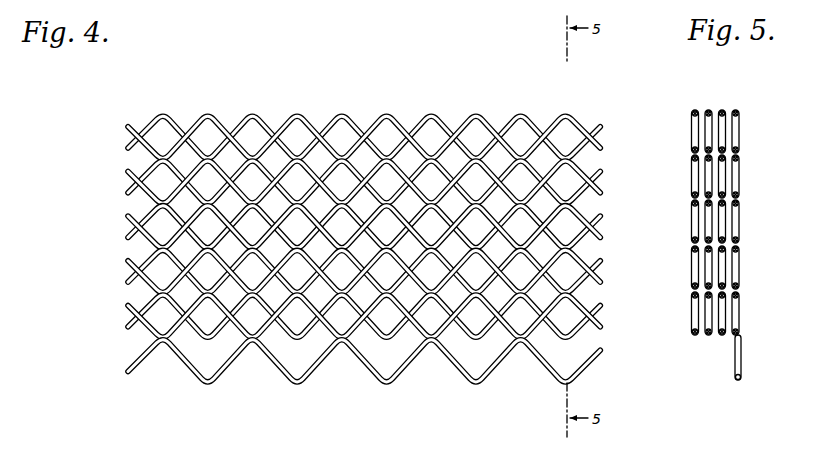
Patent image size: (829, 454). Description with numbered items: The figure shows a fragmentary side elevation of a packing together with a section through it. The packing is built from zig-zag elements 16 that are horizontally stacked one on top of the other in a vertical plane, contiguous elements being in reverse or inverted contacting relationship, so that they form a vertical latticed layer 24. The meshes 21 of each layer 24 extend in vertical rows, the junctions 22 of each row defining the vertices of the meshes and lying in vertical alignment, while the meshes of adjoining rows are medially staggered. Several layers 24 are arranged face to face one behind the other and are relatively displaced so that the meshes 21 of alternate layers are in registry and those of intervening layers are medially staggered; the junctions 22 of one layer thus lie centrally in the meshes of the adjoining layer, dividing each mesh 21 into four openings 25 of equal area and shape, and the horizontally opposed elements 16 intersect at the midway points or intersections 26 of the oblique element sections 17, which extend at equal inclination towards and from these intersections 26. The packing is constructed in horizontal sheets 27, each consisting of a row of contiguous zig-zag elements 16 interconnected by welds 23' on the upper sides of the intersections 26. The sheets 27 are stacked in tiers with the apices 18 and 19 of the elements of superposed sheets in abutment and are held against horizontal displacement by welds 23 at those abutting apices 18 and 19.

In FIG. 4, the zig-zag element 16 is at (129, 144).
In FIG. 5, the zig-zag element 16 is at (689, 131).
In FIG. 4, the oblique element section 17 is at (392, 128).
In FIG. 4, the apex 18 is at (208, 388).
In FIG. 4, the apex 19 is at (431, 351).
In FIG. 4, the mesh 21 is at (345, 130).
In FIG. 4, the junction 22 is at (298, 128).
In FIG. 4, the weld 23 is at (114, 187).
In FIG. 5, the weld 23 is at (757, 357).
In FIG. 4, the weld 23' is at (257, 83).
In FIG. 5, the weld 23' is at (670, 150).
In FIG. 4, the vertical latticed layer 24 is at (167, 108).
In FIG. 5, the vertical latticed layer 24 is at (694, 108).
In FIG. 4, the opening 25 is at (150, 272).
In FIG. 4, the intersection 26 is at (598, 128).
In FIG. 4, the sheet 27 is at (92, 230).
In FIG. 5, the sheet 27 is at (767, 223).